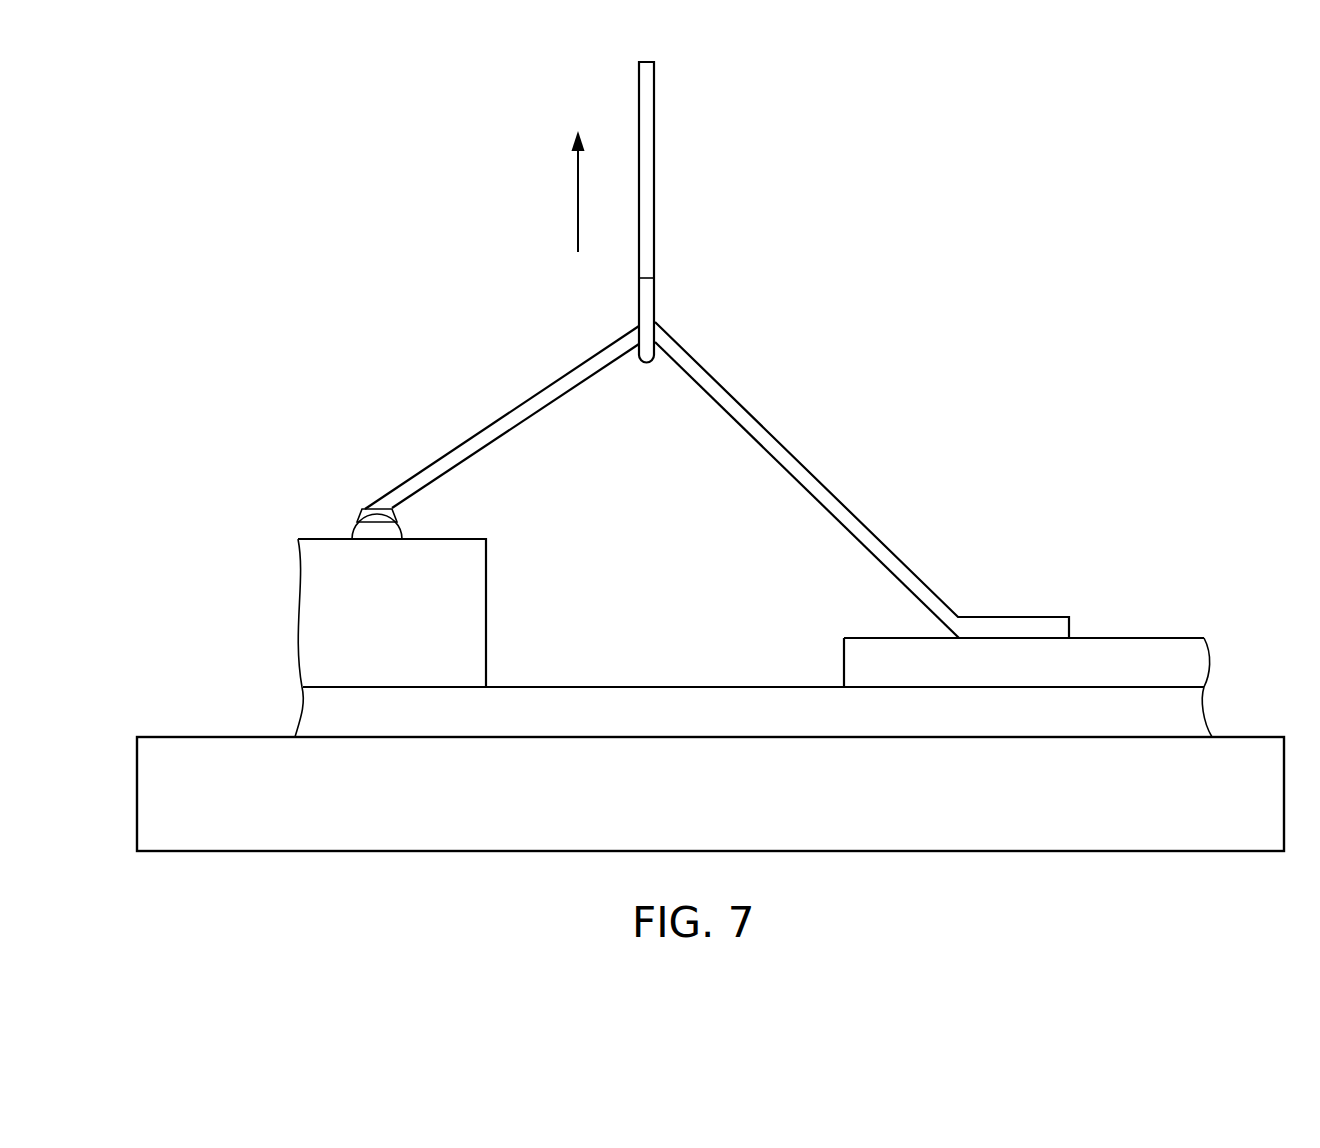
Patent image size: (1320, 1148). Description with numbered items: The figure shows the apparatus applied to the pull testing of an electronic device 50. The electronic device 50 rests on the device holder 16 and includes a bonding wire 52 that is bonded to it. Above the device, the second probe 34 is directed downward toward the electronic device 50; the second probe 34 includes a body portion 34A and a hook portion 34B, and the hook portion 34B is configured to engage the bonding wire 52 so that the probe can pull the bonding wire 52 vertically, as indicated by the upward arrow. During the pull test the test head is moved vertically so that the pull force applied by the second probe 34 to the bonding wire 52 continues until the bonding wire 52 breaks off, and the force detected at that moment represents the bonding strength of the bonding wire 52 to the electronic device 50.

The device holder 16 is at (724, 819).
The second probe 34 is at (723, 212).
The body portion 34A is at (649, 212).
The hook portion 34B is at (691, 320).
The electronic device 50 is at (997, 550).
The bonding wire 52 is at (798, 470).